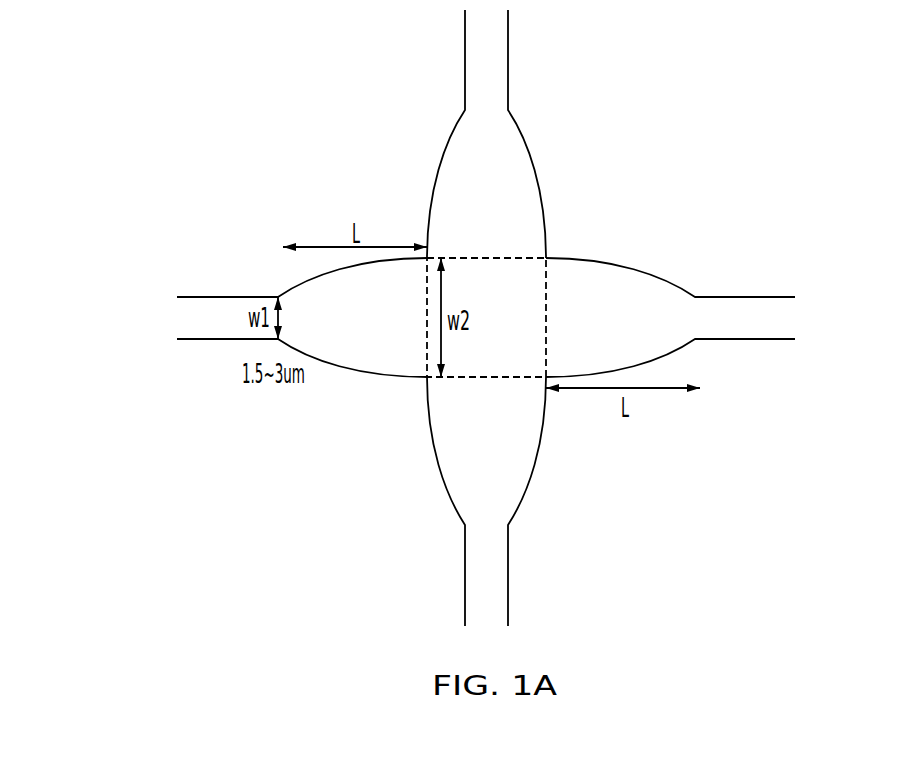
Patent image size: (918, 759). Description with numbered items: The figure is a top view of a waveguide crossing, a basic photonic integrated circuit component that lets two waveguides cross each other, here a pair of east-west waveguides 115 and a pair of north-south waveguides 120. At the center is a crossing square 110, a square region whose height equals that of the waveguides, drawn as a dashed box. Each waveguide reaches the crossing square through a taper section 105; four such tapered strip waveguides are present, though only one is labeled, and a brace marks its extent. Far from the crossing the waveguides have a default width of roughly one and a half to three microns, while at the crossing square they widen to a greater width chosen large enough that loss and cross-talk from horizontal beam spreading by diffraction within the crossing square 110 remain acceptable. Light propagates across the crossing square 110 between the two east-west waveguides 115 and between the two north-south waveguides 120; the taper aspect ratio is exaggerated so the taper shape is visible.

The taper section 105 is at (697, 188).
The crossing square 110 is at (478, 378).
The east-west waveguide 115 is at (207, 297).
The north-south waveguide 120 is at (465, 45).